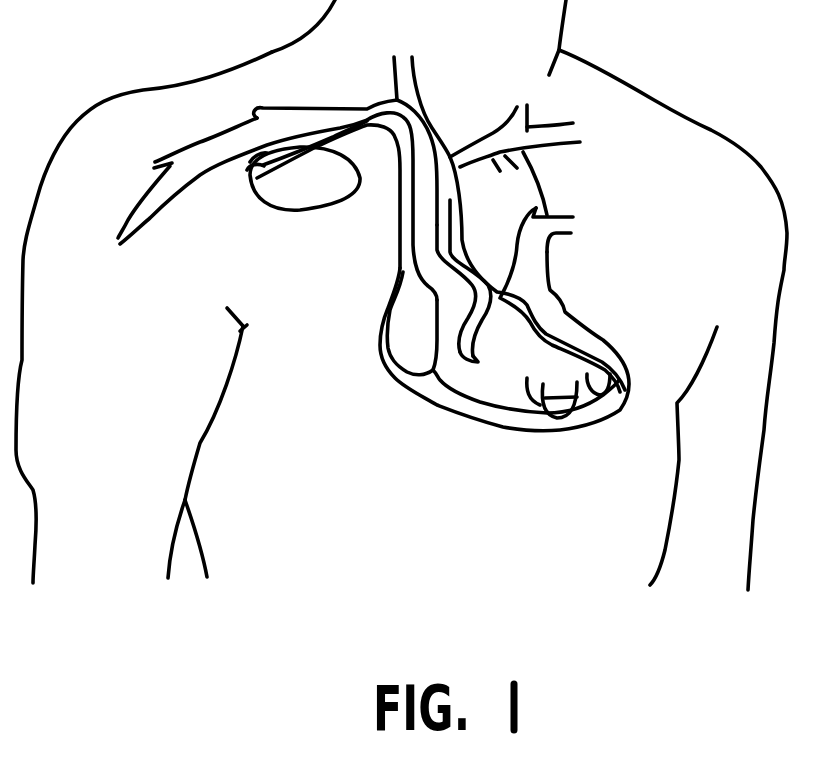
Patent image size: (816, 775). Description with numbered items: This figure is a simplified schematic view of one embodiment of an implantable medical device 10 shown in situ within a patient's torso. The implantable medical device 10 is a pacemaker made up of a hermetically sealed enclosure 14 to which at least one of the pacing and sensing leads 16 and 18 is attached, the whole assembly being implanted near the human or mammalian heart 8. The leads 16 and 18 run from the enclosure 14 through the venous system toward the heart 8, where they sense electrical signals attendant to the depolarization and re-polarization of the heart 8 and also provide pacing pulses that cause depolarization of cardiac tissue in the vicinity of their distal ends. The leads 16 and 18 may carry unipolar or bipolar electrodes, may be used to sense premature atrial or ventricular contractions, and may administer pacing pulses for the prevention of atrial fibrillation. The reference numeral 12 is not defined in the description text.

The heart 8 is at (592, 326).
The implantable medical device 10 is at (251, 237).
The pacemaker connector header 12 is at (248, 170).
The hermetically sealed enclosure 14 is at (327, 192).
The pacing and sensing lead 16 is at (401, 247).
The pacing and sensing lead 18 is at (437, 340).